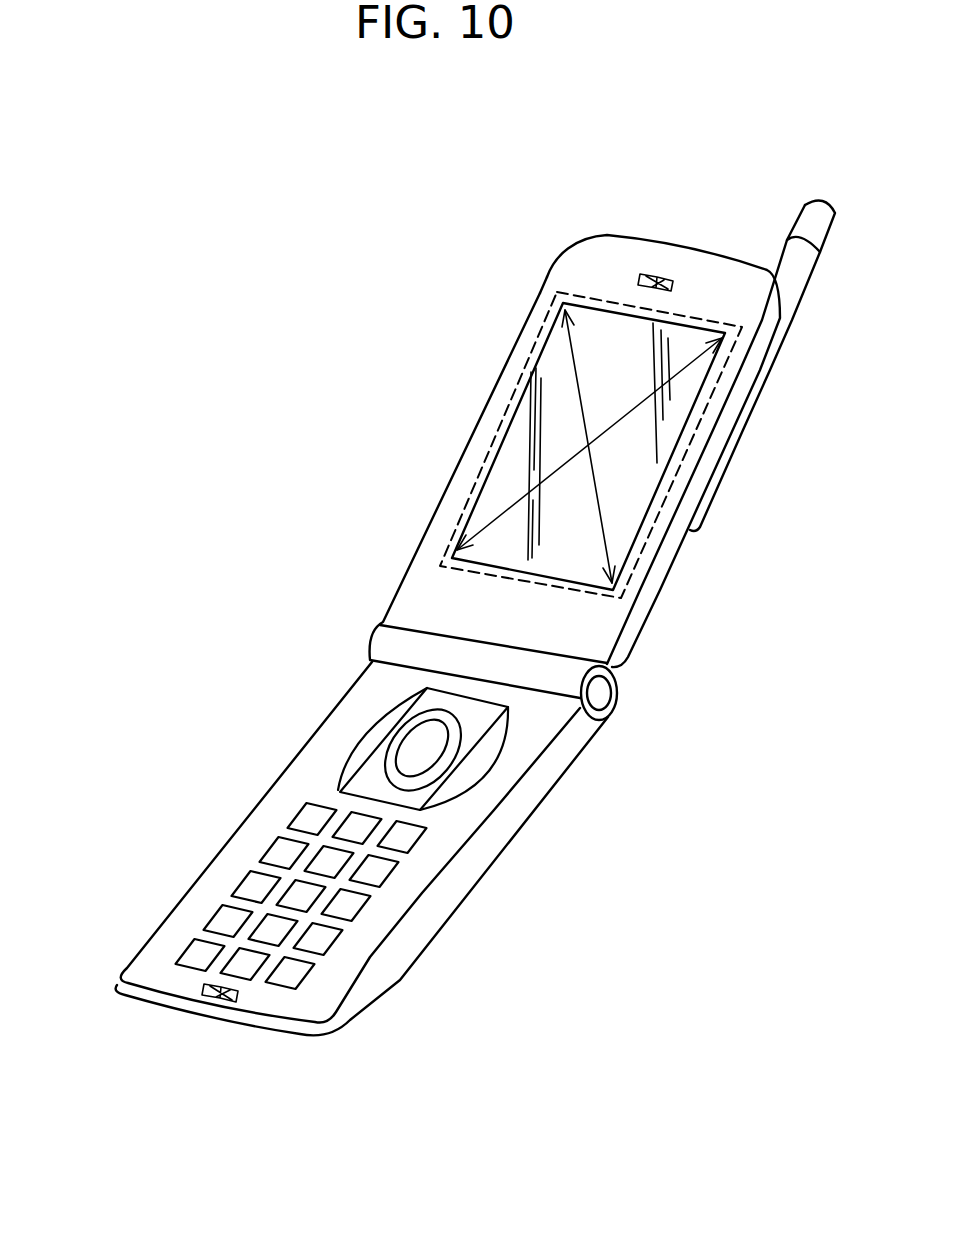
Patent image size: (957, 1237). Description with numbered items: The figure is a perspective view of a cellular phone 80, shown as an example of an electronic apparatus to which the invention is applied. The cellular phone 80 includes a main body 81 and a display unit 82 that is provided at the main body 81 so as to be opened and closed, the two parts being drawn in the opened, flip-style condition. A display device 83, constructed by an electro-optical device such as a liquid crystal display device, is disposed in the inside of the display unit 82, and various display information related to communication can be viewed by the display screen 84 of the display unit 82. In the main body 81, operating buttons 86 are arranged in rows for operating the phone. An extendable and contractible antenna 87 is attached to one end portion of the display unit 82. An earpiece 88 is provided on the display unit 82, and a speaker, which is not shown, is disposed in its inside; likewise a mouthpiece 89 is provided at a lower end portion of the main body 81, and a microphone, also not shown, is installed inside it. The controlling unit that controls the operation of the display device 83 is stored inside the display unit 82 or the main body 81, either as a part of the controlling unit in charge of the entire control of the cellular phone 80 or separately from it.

The cellular phone 80 is at (45, 828).
The main body 81 is at (218, 888).
The display unit 82 is at (663, 577).
The display device 83 is at (500, 426).
The display screen 84 is at (623, 423).
The operating buttons 86 is at (270, 932).
The antenna 87 is at (813, 215).
The earpiece 88 is at (655, 275).
The mouthpiece 89 is at (210, 1000).